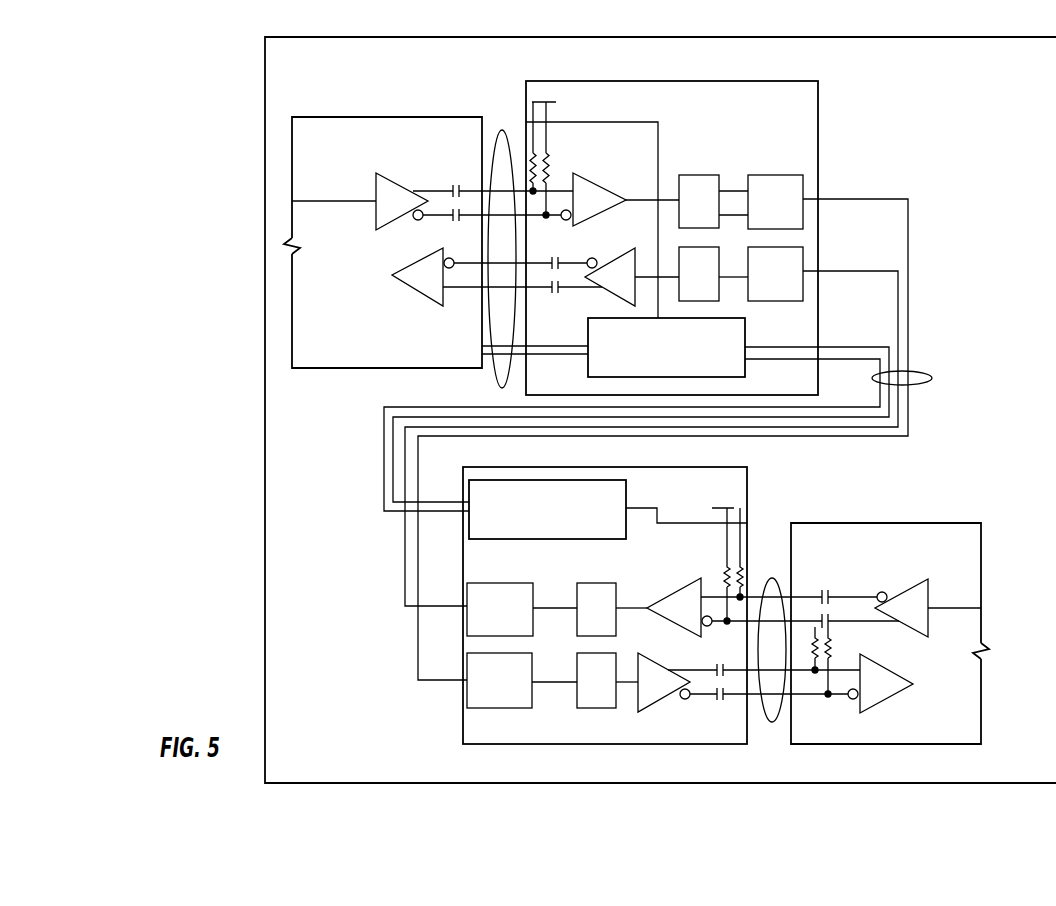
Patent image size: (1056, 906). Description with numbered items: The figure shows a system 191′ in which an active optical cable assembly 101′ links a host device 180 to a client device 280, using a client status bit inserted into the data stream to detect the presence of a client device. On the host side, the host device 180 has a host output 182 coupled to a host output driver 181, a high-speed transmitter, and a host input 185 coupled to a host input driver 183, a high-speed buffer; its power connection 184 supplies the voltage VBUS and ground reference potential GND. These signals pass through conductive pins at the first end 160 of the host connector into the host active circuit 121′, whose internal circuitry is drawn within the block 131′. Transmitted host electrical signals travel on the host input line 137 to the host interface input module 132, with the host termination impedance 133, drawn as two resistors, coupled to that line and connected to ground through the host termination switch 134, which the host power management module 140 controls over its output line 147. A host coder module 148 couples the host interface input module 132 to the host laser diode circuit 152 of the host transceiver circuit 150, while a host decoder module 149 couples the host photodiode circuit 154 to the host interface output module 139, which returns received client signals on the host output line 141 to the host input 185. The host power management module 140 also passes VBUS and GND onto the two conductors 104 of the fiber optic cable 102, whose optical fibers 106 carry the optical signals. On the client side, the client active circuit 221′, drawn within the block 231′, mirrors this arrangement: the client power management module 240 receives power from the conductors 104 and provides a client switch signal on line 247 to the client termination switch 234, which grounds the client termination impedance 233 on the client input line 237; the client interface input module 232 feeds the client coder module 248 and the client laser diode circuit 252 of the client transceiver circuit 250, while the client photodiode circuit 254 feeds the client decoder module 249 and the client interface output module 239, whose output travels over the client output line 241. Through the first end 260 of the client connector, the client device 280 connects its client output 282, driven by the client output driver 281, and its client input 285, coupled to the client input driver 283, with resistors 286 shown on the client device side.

The system 191′ is at (230, 92).
The active optical cable assembly 101′ is at (930, 110).
The host device 180 is at (335, 116).
The host output driver 181 is at (372, 184).
The host output 182 is at (452, 182).
The host input driver 183 is at (400, 286).
The power connection 184 is at (478, 345).
The host input 185 is at (470, 256).
The first end 160 is at (498, 135).
The host active circuit 121′ is at (822, 165).
The first module circuitry 131′ is at (622, 106).
The output line 147 is at (660, 134).
The host termination impedance 133 is at (550, 173).
The host termination switch 134 is at (560, 140).
The host input line 137 is at (535, 228).
The host interface input module 132 is at (598, 179).
The host coder module 148 is at (695, 175).
The host laser diode circuit 152 is at (775, 175).
The host transceiver circuit 150 is at (808, 215).
The host interface output module 139 is at (618, 300).
The host output line 141 is at (563, 298).
The host decoder module 149 is at (720, 295).
The host photodiode circuit 154 is at (803, 290).
The host power management module 140 is at (745, 362).
The two conductors 104 is at (878, 342).
The fiber optic cable 102 is at (925, 375).
The optical fibers 106 is at (915, 424).
The second module circuitry 231′ is at (690, 500).
The client active circuit 221′ is at (458, 700).
The client power management module 240 is at (487, 542).
The line 247 is at (637, 508).
The client laser diode circuit 252 is at (534, 628).
The client coder module 248 is at (598, 582).
The client interface input module 232 is at (675, 588).
The client termination impedance 233 is at (720, 578).
The client termination switch 234 is at (735, 512).
The client input line 237 is at (728, 630).
The client photodiode circuit 254 is at (533, 695).
The client transceiver circuit 250 is at (530, 712).
The client decoder module 249 is at (595, 708).
The client interface output module 239 is at (640, 712).
The client output line 241 is at (716, 707).
The first end 260 is at (773, 578).
The client device 280 is at (905, 522).
The client output 282 is at (822, 590).
The client output driver 281 is at (920, 582).
The termination resistors 286 is at (842, 640).
The client input 285 is at (828, 700).
The client input driver 283 is at (888, 705).